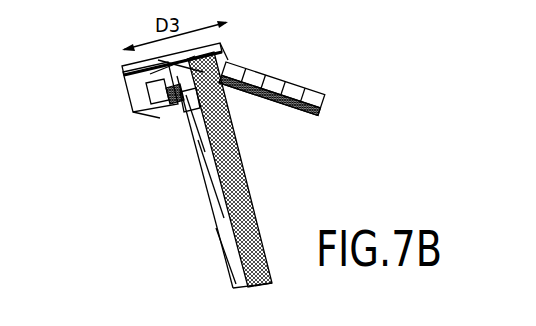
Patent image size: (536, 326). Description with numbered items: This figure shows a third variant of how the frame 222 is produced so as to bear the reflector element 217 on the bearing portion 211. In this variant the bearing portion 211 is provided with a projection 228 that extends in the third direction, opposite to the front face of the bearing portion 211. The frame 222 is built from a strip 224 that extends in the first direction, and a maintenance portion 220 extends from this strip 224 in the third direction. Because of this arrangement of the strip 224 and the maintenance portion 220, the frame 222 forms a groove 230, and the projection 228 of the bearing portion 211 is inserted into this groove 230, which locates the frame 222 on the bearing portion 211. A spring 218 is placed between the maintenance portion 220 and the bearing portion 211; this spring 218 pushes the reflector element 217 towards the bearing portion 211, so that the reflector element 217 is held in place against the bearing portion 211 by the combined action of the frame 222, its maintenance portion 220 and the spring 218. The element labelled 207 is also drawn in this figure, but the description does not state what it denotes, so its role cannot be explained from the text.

The shaft 207 is at (201, 182).
The bearing portion 211 is at (232, 251).
The reflector element 217 is at (278, 113).
The spring 218 is at (171, 121).
The maintenance portion 220 is at (139, 117).
The frame 222 is at (272, 74).
The strip 224 is at (121, 100).
The projection 228 is at (155, 59).
The groove 230 is at (135, 86).